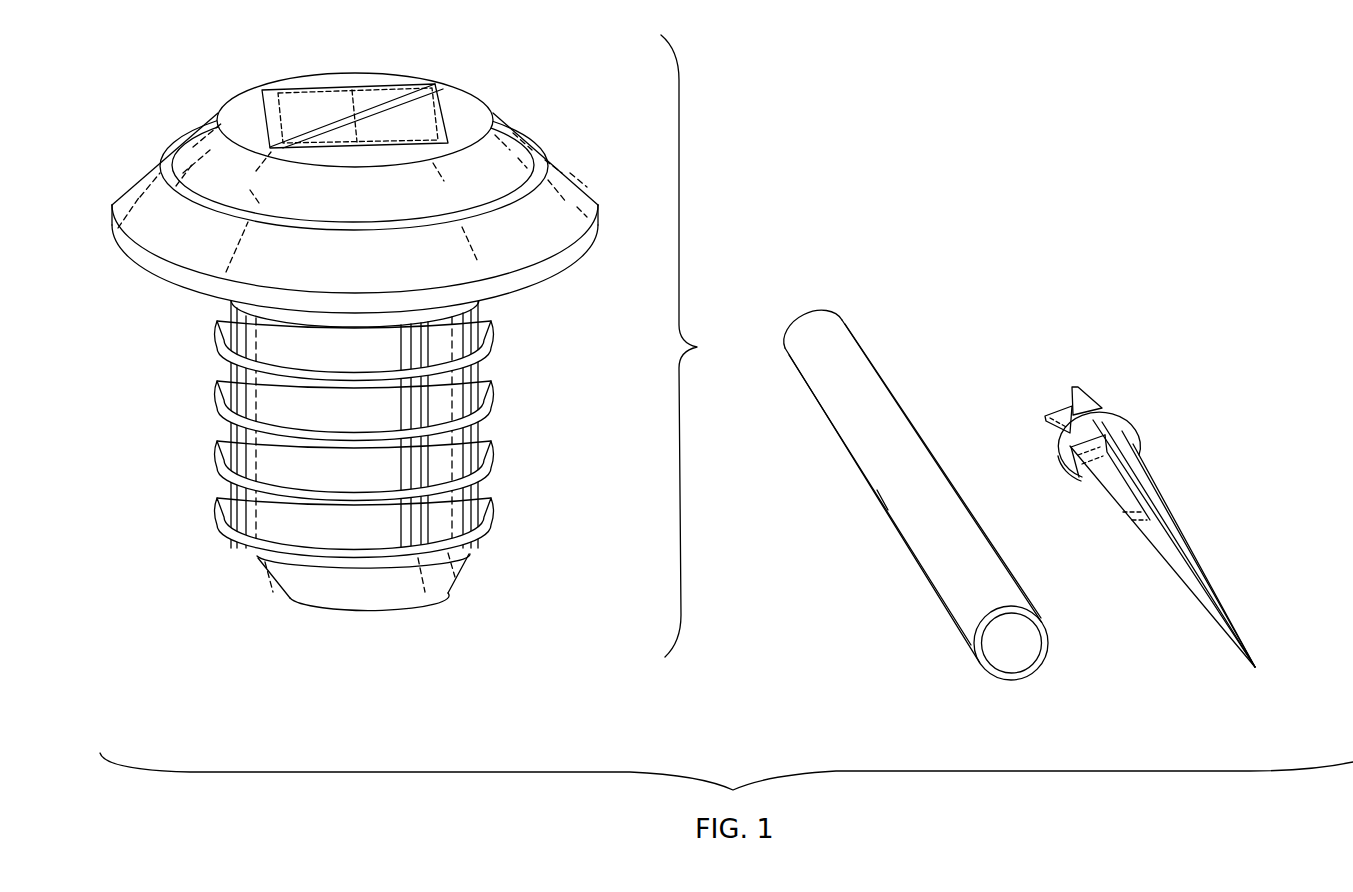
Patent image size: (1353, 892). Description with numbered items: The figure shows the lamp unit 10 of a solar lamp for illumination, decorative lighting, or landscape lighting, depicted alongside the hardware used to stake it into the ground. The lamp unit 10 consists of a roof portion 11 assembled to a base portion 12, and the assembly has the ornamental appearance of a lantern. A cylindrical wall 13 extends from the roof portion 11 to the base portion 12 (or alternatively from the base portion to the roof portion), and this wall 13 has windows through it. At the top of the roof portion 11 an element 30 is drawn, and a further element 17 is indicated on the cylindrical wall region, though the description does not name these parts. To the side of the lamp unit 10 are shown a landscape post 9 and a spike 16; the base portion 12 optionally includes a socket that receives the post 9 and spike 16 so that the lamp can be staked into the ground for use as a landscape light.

The lamp unit 10 is at (693, 346).
The roof portion 11 is at (213, 143).
The solar panel 30 is at (312, 94).
The cage body 17 is at (447, 385).
The cylindrical wall 13 is at (493, 461).
The base portion 12 is at (433, 574).
The landscape post 9 is at (866, 373).
The spike 16 is at (1118, 417).